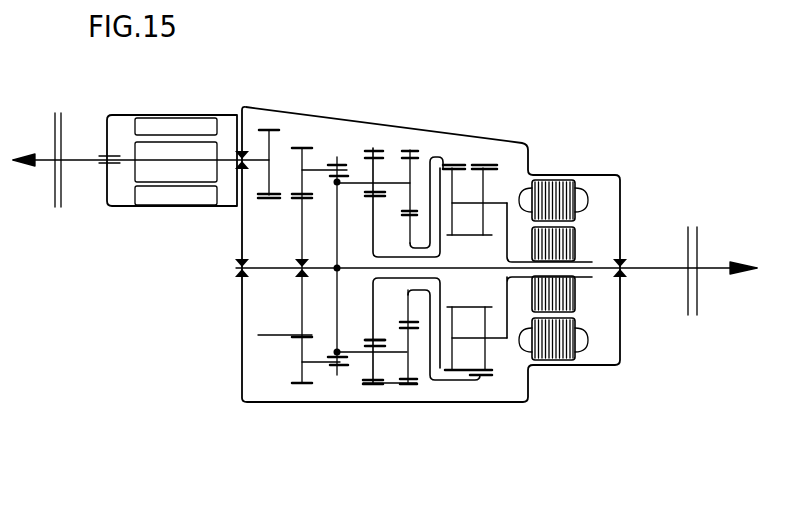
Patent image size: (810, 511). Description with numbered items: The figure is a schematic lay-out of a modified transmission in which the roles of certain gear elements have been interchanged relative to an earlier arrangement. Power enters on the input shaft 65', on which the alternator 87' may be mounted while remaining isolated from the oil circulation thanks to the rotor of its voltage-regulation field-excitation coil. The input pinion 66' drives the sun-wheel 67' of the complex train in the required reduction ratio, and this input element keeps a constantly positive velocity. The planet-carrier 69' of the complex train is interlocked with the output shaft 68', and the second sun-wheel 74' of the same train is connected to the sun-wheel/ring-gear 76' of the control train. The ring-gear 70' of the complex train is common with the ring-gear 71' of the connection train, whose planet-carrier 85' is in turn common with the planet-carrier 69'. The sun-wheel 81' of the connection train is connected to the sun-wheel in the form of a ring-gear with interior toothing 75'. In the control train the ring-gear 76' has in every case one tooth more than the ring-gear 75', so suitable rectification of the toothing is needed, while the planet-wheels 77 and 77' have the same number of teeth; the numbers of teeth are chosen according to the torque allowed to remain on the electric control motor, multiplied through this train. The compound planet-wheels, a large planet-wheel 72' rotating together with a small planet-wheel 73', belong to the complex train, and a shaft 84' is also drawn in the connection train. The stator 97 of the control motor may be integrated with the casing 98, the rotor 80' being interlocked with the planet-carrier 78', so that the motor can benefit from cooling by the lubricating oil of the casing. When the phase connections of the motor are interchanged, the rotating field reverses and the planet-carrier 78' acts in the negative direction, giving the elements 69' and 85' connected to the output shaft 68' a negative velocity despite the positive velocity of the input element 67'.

The input shaft 65' is at (141, 162).
The input pinion 66' is at (295, 138).
The sun-wheel 67' is at (304, 265).
The output shaft 68' is at (496, 269).
The planet-carrier 69' is at (356, 266).
The ring-gear 70' is at (395, 176).
The ring-gear 71' is at (424, 169).
The large planet-wheel 72' is at (284, 365).
The small planet-wheel 73' is at (391, 355).
The second sun-wheel 74' is at (362, 310).
The sun-wheel in the form of a ring-gear with interior toothing 75' is at (520, 142).
The sun-wheel/ring-gear 76' is at (467, 166).
The planet-wheel 77' is at (490, 166).
The planet-wheel 77 is at (476, 371).
The planet-carrier 78' is at (546, 245).
The rotor 80' is at (573, 220).
The sun-wheel 81' is at (428, 329).
The shaft 84' is at (412, 361).
The planet-carrier 85' is at (408, 205).
The alternator 87' is at (172, 179).
The stator 97 is at (548, 350).
The casing 98 is at (523, 403).